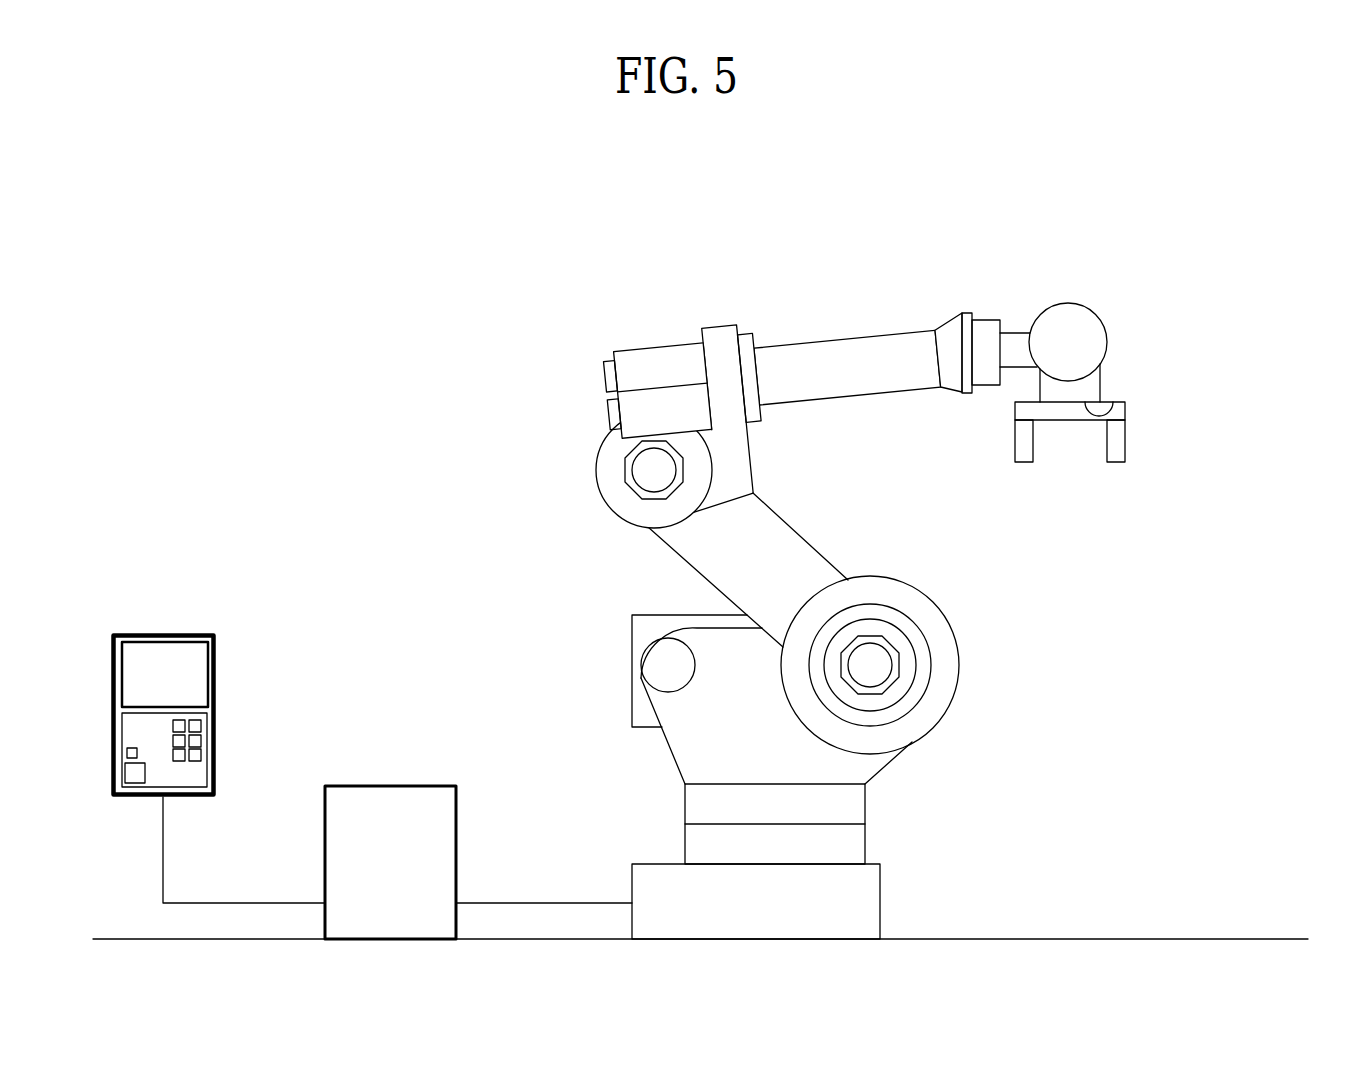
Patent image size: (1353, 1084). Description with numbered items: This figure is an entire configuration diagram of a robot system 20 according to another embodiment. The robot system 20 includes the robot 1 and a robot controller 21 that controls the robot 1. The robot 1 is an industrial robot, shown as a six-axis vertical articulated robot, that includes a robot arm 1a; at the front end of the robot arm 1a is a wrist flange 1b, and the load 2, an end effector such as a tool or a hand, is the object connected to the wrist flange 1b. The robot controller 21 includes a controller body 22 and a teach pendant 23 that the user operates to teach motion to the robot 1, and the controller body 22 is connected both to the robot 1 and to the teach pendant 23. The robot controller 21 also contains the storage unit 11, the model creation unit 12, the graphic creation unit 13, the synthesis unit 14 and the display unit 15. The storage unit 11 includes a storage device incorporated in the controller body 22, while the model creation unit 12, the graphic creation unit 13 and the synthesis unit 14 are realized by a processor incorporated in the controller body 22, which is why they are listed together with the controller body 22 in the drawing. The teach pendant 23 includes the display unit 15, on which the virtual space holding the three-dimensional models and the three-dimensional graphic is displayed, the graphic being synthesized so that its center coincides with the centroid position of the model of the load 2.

The robot 1 is at (930, 262).
The robot arm 1a is at (843, 337).
The wrist flange 1b is at (1118, 403).
The load 2 is at (1127, 435).
The storage unit 11 is at (390, 862).
The model creation unit 12 is at (390, 862).
The graphic creation unit 13 is at (390, 862).
The synthesis unit 14 is at (390, 862).
The display unit 15 is at (162, 642).
The robot system 20 is at (398, 350).
The robot controller 21 is at (452, 636).
The controller body 22 is at (385, 786).
The teach pendant 23 is at (217, 740).